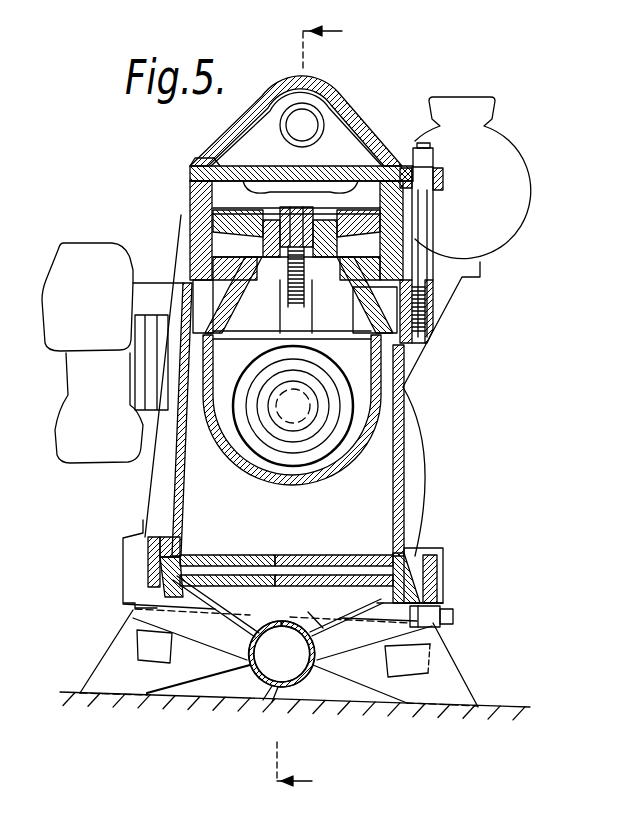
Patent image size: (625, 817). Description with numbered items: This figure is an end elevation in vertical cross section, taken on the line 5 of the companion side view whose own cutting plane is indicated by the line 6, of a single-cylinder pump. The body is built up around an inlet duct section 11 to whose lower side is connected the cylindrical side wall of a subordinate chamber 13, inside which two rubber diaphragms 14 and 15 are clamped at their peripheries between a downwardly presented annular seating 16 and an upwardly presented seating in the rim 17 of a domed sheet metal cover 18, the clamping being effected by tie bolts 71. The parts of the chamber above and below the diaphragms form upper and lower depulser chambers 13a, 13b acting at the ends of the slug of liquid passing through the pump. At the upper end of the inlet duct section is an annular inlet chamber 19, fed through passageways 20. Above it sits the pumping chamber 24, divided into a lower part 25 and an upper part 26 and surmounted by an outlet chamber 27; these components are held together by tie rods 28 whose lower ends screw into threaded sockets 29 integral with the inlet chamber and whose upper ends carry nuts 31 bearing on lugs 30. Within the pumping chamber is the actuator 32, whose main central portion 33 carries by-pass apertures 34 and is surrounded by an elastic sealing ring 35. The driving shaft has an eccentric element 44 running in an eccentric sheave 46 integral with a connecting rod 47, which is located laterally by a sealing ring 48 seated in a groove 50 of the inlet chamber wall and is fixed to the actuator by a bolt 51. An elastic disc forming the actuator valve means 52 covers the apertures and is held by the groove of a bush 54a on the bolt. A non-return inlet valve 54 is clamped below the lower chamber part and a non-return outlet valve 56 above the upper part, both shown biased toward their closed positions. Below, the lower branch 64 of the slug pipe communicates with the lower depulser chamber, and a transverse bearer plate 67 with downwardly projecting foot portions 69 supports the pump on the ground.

The section line 5— 5 is at (310, 82).
The section line 6— 6 is at (317, 407).
The inlet duct section 11 is at (403, 520).
The subordinate chamber 13 is at (150, 536).
The upper depulser chamber 13a is at (300, 562).
The lower depulser chamber 13b is at (316, 621).
The diaphragm 14 is at (228, 557).
The diaphragm 15 is at (147, 578).
The annular seating 16 is at (410, 560).
The rim 17 is at (443, 580).
The domed sheet metal cover 18 is at (212, 614).
The annular inlet chamber 19 is at (207, 300).
The passageways 20 is at (396, 367).
The pumping chamber 24 is at (177, 184).
The lower part of pumping chamber 25 is at (403, 238).
The upper part of pumping chamber 26 is at (407, 202).
The outlet chamber 27 is at (355, 126).
The tie rods 28 is at (437, 282).
The internally threaded sockets 29 is at (435, 330).
The lugs 30 is at (440, 180).
The nuts 31 is at (435, 155).
The actuator 32 is at (232, 259).
The main central portion 33 is at (277, 282).
The apertures 34 is at (236, 240).
The sealing ring 35 is at (200, 210).
The eccentric element 44 is at (327, 404).
The eccentric sheave 46 is at (370, 426).
The connecting rod 47 is at (320, 345).
The sealing ring 48 is at (320, 336).
The groove in inlet chamber wall 50 is at (356, 292).
The bolt 51 is at (306, 214).
The actuator valve means 52 is at (287, 215).
The non-return inlet valve 54 is at (480, 272).
The bush 54a is at (322, 226).
The non-return outlet valve 56 is at (212, 163).
The lower branch of slug pipe 64 is at (270, 690).
The bearer plate 67 is at (450, 665).
The foot portions 69 is at (438, 708).
The tie bolts 71 is at (453, 618).